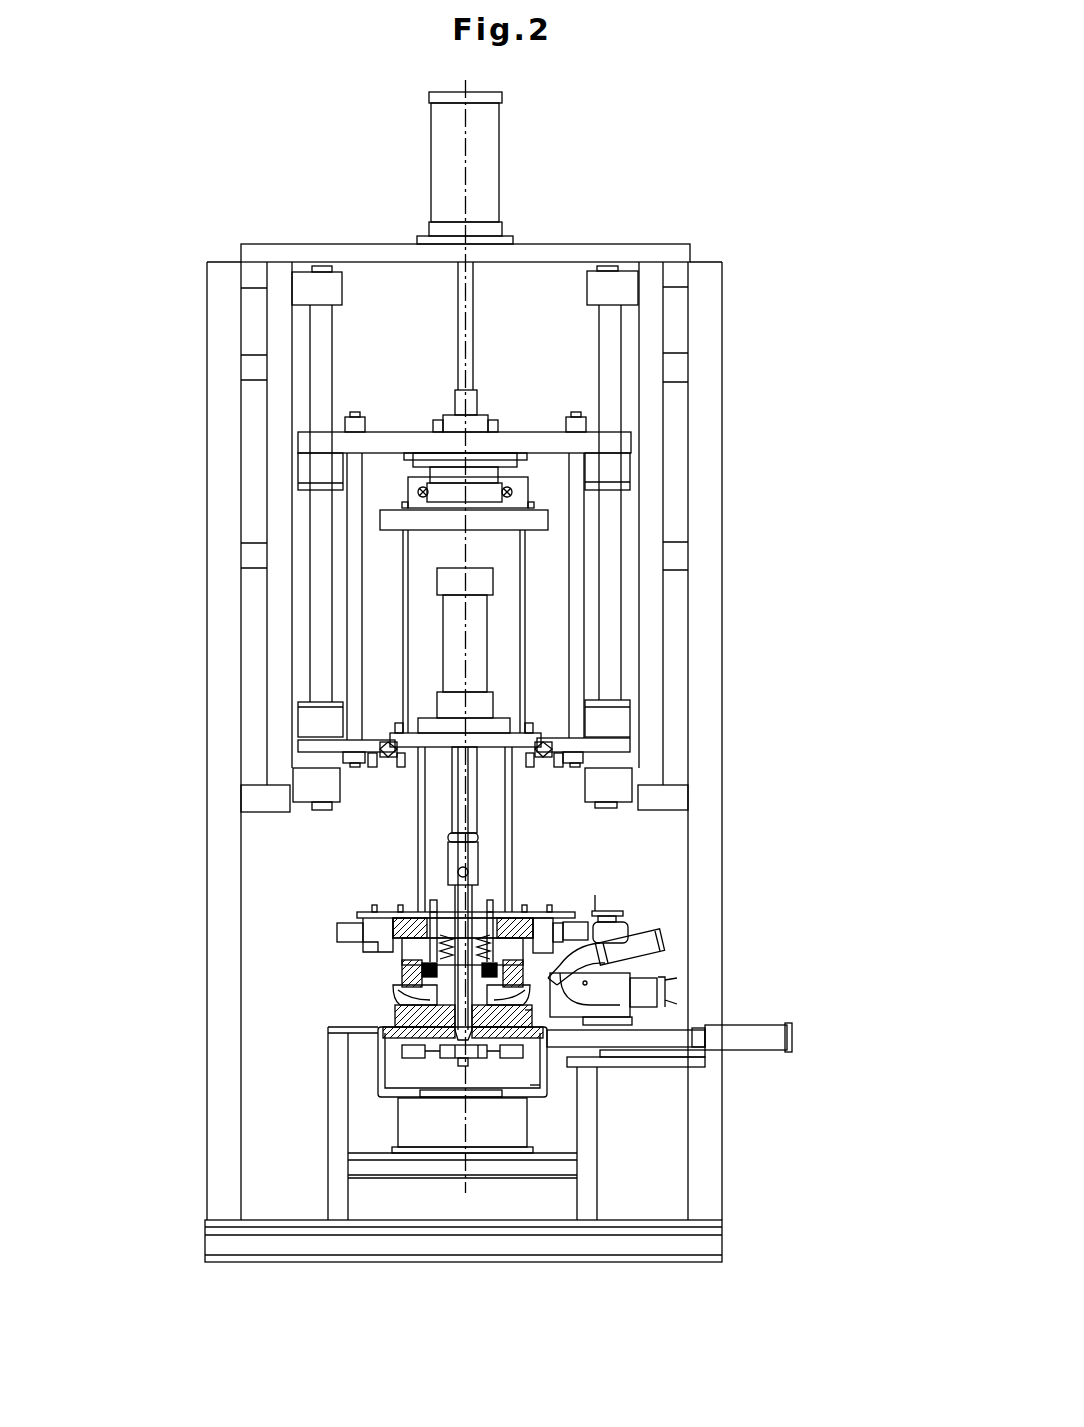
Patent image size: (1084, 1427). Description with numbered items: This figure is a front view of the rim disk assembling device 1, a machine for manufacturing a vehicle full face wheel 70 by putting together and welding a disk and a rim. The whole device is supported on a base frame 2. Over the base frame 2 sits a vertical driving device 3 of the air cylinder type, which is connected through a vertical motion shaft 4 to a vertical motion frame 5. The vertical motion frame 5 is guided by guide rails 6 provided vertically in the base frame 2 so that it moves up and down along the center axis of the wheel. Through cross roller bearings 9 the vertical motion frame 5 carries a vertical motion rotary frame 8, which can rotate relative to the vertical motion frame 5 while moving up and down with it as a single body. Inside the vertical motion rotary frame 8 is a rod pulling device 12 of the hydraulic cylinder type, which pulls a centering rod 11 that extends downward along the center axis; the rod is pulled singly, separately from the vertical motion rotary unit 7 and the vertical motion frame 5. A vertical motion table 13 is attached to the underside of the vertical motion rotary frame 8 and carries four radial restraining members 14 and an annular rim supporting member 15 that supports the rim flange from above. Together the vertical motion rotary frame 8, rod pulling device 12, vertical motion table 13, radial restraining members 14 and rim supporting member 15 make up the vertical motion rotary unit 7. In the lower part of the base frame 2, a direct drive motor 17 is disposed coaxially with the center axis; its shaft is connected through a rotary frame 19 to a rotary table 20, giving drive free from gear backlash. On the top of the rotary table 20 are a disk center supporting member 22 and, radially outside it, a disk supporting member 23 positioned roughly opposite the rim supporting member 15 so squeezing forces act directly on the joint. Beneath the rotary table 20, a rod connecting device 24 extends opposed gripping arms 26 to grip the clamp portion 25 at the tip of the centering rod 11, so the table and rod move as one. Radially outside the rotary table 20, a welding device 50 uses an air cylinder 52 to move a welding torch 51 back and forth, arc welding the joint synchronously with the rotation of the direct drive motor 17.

The rim disk assembling device 1 is at (736, 195).
The base frame 2 is at (712, 583).
The vertical driving device 3 is at (441, 184).
The vertical motion shaft 4 is at (476, 305).
The vertical motion frame 5 is at (397, 438).
The guide rails 6 is at (320, 328).
The vertical motion rotary unit 7 is at (526, 770).
The vertical motion rotary frame 8 is at (525, 687).
The cross roller bearings 9 is at (405, 492).
The centering rod 11 is at (458, 893).
The rod pulling device 12 is at (452, 613).
The vertical motion table 13 is at (357, 912).
The radial restraining members 14 is at (413, 977).
The rim supporting member 15 is at (540, 912).
The direct drive motor 17 is at (452, 1138).
The rotary frame 19 is at (538, 1092).
The rotary table 20 is at (373, 1037).
The disk center supporting member 22 is at (380, 1035).
The disk supporting member 23 is at (530, 1012).
The rod connecting device 24 is at (411, 1058).
The clamp portion 25 is at (455, 1050).
The gripping arms 26 is at (478, 1050).
The welding device 50 is at (628, 918).
The welding torch 51 is at (590, 985).
The air cylinder 52 is at (760, 1033).
The vehicle full face wheel 70 is at (400, 963).